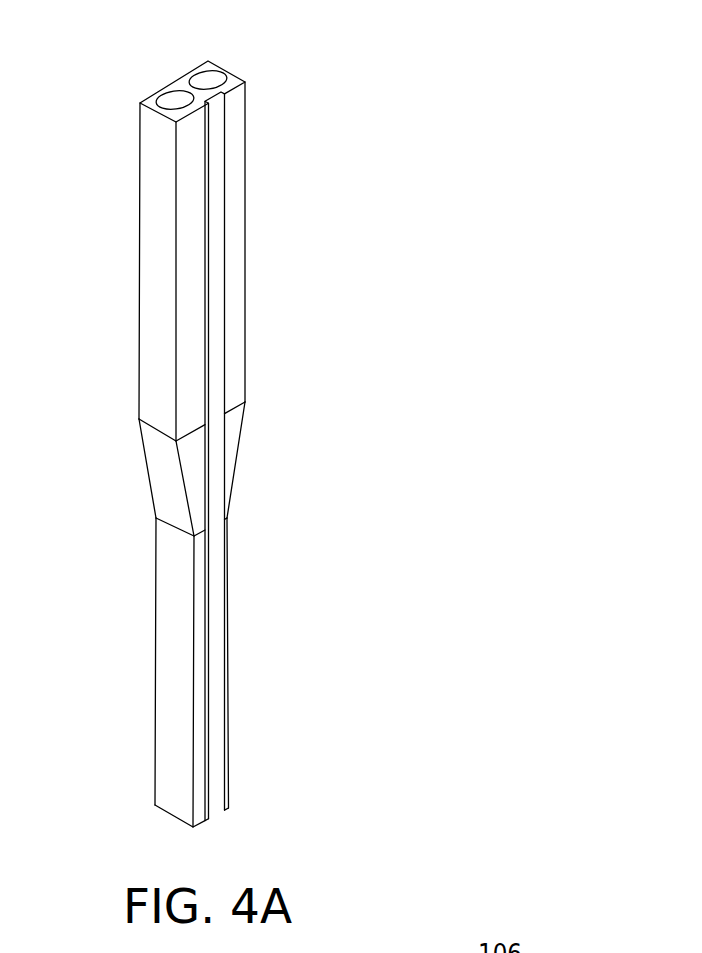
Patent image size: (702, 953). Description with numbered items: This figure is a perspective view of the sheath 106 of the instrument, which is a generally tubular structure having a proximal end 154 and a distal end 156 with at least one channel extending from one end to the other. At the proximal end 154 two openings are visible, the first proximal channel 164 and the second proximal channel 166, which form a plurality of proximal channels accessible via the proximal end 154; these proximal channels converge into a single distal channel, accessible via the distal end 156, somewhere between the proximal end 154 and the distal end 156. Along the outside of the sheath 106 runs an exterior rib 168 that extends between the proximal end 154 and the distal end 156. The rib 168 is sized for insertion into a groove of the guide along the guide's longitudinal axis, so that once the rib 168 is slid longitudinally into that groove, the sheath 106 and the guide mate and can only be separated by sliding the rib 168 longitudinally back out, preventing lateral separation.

The sheath 106 is at (200, 416).
The proximal end 154 is at (245, 115).
The distal end 156 is at (163, 785).
The first proximal channel 164 is at (165, 85).
The second proximal channel 166 is at (216, 66).
The exterior rib 168 is at (213, 375).